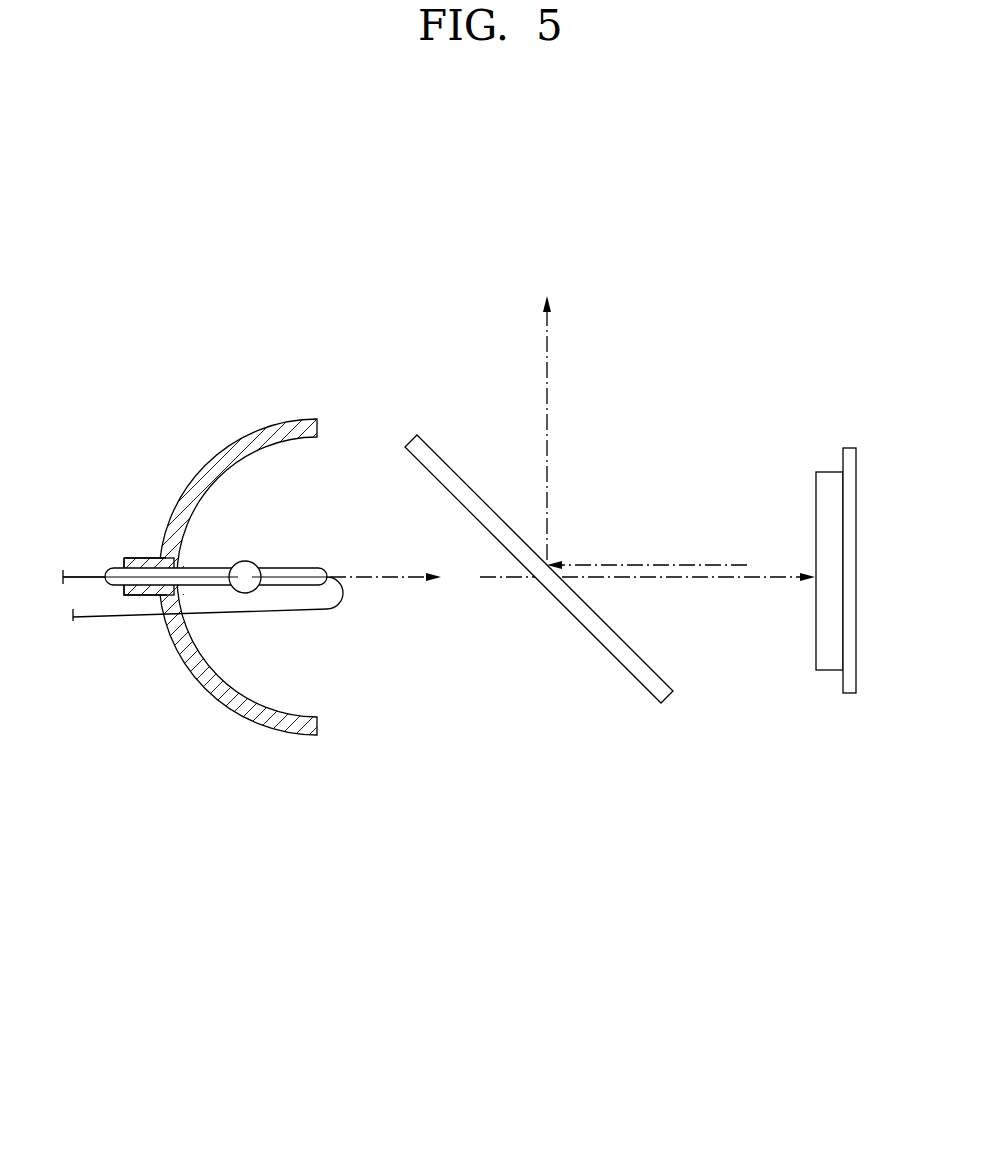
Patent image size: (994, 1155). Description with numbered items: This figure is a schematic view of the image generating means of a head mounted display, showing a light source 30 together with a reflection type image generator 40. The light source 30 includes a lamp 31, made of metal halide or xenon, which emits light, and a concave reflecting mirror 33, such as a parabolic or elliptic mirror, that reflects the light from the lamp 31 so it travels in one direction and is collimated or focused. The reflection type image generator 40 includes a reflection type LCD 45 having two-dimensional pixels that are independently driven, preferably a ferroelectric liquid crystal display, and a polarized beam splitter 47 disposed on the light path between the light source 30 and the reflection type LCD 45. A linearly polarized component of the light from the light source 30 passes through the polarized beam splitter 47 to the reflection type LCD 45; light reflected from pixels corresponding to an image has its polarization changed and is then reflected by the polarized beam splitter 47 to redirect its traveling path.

The light source 30 is at (340, 551).
The concave reflecting mirror 33 is at (287, 423).
The lamp 31 is at (257, 560).
The polarized beam splitter 47 is at (659, 693).
The reflection type LCD 45 is at (835, 659).
The image display unit 40 is at (630, 695).